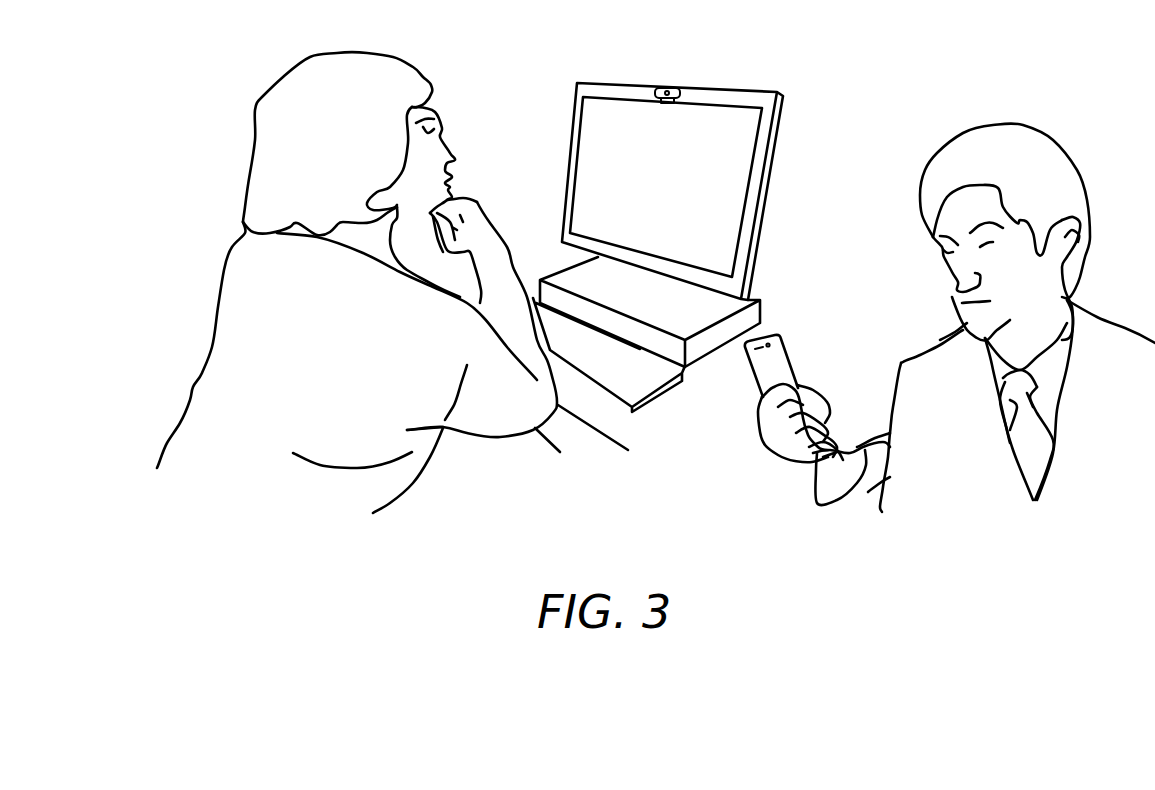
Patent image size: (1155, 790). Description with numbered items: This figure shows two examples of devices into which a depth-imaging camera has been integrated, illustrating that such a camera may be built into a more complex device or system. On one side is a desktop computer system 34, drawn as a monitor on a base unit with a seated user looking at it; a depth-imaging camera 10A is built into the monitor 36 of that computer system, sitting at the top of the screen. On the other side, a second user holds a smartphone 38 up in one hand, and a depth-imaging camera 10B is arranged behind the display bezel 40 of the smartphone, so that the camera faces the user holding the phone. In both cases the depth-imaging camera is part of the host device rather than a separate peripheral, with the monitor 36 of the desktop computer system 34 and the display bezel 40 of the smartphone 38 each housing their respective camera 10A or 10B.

The depth-imaging camera 10A is at (663, 101).
The depth-imaging camera 10B is at (769, 331).
The desktop computer system 34 is at (690, 247).
The monitor 36 is at (733, 145).
The smartphone 38 is at (739, 384).
The display bezel 40 is at (797, 371).